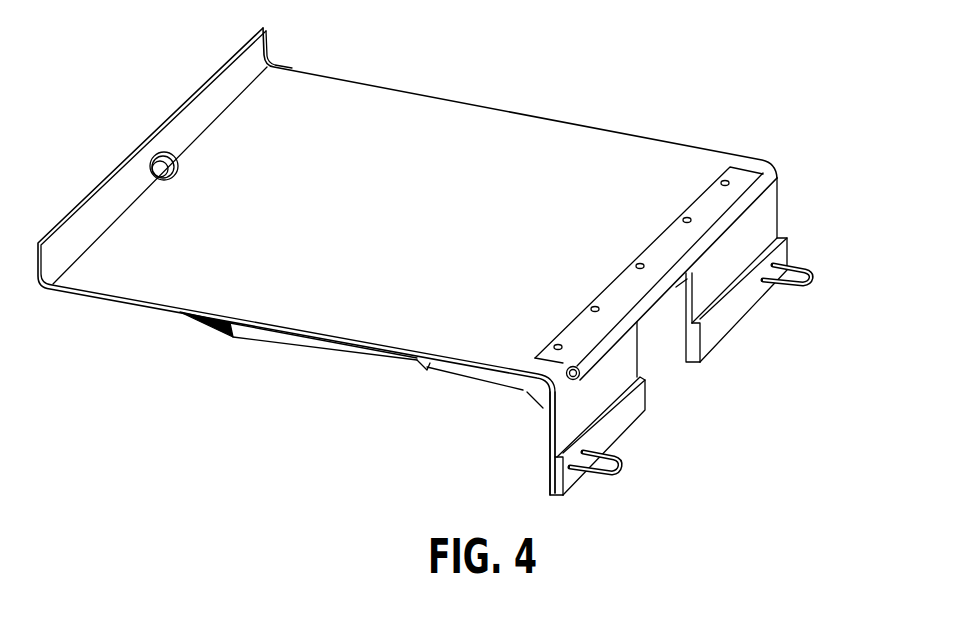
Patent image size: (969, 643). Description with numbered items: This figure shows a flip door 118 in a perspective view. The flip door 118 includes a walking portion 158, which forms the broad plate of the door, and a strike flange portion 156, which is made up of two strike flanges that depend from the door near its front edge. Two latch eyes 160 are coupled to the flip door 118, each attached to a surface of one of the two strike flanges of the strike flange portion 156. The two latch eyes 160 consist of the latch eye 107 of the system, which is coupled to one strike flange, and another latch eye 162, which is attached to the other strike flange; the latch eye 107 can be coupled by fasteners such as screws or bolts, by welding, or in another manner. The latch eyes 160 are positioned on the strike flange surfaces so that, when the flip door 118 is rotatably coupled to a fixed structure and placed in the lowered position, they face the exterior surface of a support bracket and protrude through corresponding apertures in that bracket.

The flip door 118 is at (742, 72).
The walking portion 158 is at (390, 107).
The strike flange portion 156 is at (593, 393).
The latch eyes 160 is at (643, 460).
The latch eye 107 is at (808, 276).
The latch eye 162 is at (618, 473).